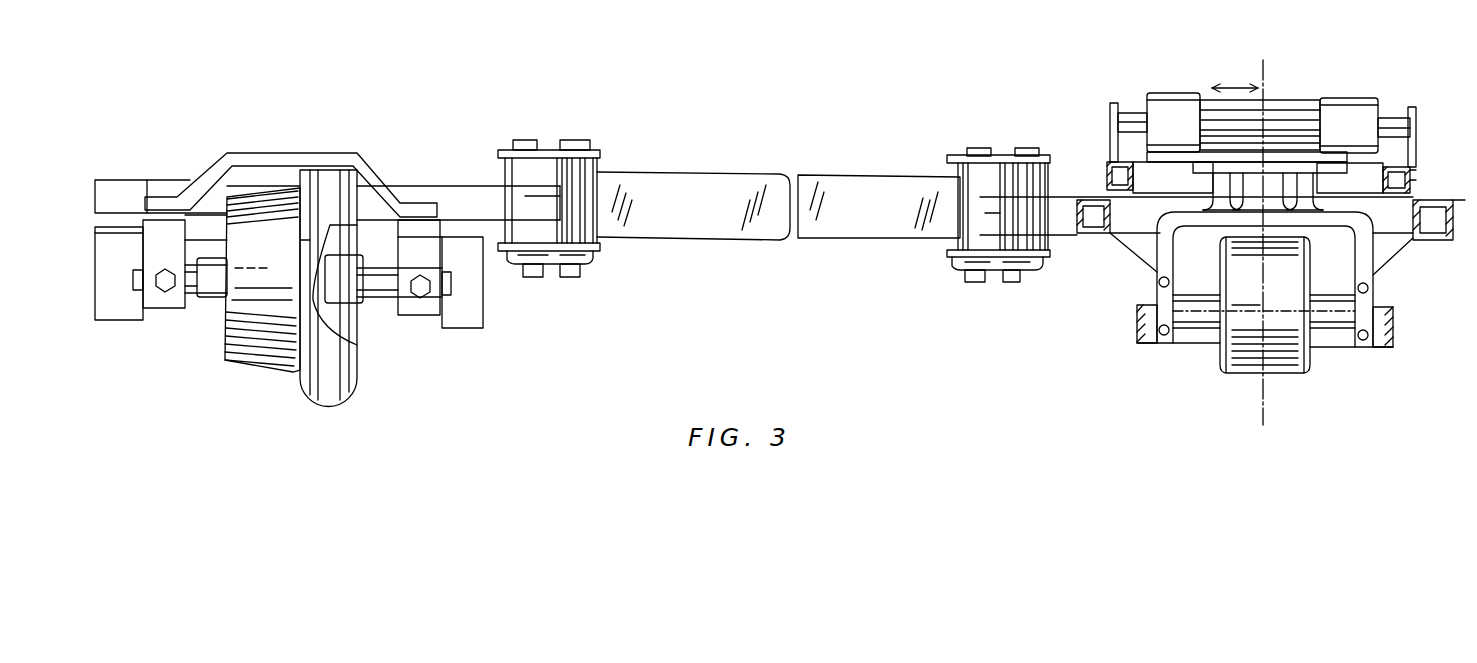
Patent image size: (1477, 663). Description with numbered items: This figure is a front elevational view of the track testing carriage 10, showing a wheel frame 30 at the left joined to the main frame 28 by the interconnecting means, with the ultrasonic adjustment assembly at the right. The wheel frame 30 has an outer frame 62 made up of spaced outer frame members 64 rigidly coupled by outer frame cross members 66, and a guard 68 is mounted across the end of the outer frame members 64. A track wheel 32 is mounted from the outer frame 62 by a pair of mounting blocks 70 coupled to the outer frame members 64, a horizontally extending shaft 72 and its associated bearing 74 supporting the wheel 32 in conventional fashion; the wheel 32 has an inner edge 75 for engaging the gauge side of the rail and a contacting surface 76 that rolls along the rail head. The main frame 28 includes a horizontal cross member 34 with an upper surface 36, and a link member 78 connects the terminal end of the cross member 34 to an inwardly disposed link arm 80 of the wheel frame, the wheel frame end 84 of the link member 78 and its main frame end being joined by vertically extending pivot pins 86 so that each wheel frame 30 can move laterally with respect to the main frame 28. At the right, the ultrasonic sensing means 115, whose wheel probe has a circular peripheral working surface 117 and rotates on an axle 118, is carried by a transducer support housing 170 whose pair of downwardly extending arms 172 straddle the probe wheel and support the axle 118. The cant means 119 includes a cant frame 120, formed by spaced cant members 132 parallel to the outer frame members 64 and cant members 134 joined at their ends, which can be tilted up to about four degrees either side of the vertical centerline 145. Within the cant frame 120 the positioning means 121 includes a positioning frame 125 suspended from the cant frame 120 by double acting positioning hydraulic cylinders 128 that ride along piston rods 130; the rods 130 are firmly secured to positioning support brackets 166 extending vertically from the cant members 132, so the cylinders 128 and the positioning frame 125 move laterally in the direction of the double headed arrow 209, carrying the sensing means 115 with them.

The probe truck or carriage 10 is at (836, 162).
The main frame 28 is at (742, 242).
The wheel frame 30 is at (466, 171).
The track wheel 32 is at (232, 360).
The cross member 34 is at (845, 228).
The upper surface 36 is at (742, 173).
The outer frame 62 is at (1462, 188).
The outer frame member 64 is at (128, 188).
The outer frame cross member 66 is at (412, 185).
The guard 68 is at (296, 165).
The mounting block 70 is at (123, 321).
The shaft 72 is at (385, 298).
The bearing 74 is at (163, 308).
The inner edge 75 is at (296, 384).
The contacting surface 76 is at (285, 372).
The link member 78 is at (1002, 160).
The link arm 80 is at (547, 205).
The wheel frame end 84 is at (598, 168).
The pivot pin 86 is at (522, 140).
The ultrasonic sensing means 115 is at (1220, 368).
The working surface 117 is at (1242, 376).
The axle 118 is at (1340, 326).
The cant means 119 is at (1413, 180).
The cant frame 120 is at (1414, 170).
The positioning means 121 is at (1318, 92).
The positioning frame 125 is at (1328, 170).
The positioning hydraulic cylinder 128 is at (1343, 98).
The piston rod 130 is at (1133, 118).
The cant member 132 is at (1107, 172).
The cant member 134 is at (1372, 162).
The vertical centerline 145 is at (1262, 66).
The positioning support bracket 166 is at (1111, 104).
The transducer support housing 170 is at (1382, 250).
The arm 172 is at (1156, 284).
The double headed arrow 209 is at (1242, 86).